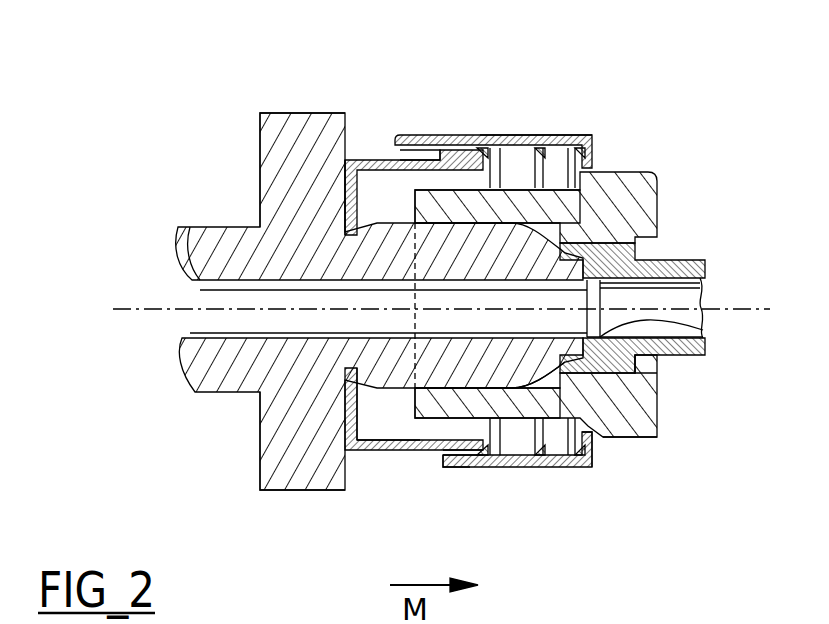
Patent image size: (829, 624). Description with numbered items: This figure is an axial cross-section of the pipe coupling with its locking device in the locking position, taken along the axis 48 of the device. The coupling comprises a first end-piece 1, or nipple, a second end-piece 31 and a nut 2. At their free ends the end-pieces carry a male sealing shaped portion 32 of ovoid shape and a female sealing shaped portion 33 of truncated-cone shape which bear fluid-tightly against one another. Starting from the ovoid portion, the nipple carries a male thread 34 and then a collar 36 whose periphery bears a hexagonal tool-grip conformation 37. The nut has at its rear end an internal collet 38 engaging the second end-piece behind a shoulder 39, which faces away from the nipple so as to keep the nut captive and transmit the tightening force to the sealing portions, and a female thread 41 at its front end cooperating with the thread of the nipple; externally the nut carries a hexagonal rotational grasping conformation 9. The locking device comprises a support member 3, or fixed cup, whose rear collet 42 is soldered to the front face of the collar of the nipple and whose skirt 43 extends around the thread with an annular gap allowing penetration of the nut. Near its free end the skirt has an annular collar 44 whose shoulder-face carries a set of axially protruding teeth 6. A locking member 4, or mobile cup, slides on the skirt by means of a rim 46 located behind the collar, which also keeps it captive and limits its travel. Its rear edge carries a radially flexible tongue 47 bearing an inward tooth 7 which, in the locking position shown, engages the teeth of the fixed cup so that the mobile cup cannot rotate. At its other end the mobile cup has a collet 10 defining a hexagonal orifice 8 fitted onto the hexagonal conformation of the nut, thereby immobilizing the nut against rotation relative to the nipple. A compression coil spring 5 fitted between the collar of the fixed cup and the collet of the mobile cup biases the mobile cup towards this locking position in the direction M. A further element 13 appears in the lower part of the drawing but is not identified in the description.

The first end-piece 1 is at (225, 158).
The nut 2 is at (660, 422).
The support member 3 is at (370, 150).
The locking member 4 is at (541, 132).
The compression coil spring 5 is at (527, 470).
The set of teeth 6 is at (438, 138).
The tooth 7 is at (430, 467).
The hexagonal shaped female portion 8 is at (598, 440).
The external rotational grasping conformation 9 is at (640, 170).
The collet 10 is at (598, 450).
The spring 13 is at (562, 470).
The second end-piece 31 is at (685, 258).
The male sealing shaped portion 32 is at (593, 430).
The female sealing shaped portion 33 is at (707, 327).
The male thread 34 is at (383, 450).
The collar 36 is at (285, 445).
The hexagonal tool-grip conformation 37 is at (295, 490).
The internal collet 38 is at (660, 240).
The shoulder 39 is at (660, 372).
The female thread 41 is at (537, 215).
The collet 42 is at (345, 198).
The skirt 43 is at (386, 158).
The annular collar 44 is at (472, 140).
The rim 46 is at (395, 450).
The tongue 47 is at (447, 467).
The axis 48 is at (140, 311).